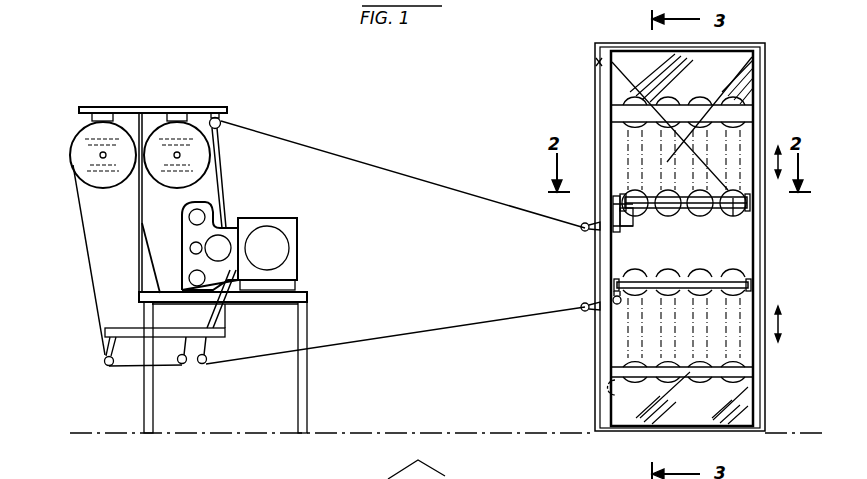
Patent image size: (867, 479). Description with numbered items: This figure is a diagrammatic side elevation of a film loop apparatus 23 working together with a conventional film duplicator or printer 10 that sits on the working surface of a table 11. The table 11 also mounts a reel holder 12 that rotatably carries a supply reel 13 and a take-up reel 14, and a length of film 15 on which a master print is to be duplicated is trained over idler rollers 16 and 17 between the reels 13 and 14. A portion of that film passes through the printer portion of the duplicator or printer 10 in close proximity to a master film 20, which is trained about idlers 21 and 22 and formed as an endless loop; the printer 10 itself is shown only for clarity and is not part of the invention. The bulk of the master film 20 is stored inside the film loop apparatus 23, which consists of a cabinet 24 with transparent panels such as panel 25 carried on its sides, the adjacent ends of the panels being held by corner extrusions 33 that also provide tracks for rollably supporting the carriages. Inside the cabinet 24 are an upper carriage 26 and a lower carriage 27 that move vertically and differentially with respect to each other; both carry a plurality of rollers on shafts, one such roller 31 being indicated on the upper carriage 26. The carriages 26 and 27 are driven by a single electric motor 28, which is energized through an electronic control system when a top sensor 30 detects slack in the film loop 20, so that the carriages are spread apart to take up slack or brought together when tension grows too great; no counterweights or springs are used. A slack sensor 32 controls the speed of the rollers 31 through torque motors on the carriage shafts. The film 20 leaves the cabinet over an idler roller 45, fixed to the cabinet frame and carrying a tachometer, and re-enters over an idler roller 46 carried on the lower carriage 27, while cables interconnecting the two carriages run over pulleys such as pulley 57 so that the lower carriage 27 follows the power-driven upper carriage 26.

The film duplicator or printer 10 is at (258, 205).
The table 11 is at (308, 296).
The reel holder 12 is at (145, 107).
The supply reel 13 is at (190, 132).
The take-up reel 14 is at (93, 130).
The film 15 is at (87, 248).
The idler roller 16 is at (112, 367).
The idler roller 17 is at (185, 367).
The master film 20 is at (348, 158).
The idler 21 is at (221, 129).
The idler 22 is at (205, 367).
The film loop apparatus 23 is at (549, 93).
The cabinet 24 is at (750, 46).
The transparent panel 25 is at (727, 75).
The upper carriage 26 is at (742, 210).
The lower carriage 27 is at (744, 298).
The electric motor 28 is at (630, 233).
The top sensor 30 is at (583, 231).
The roller 31 is at (728, 228).
The slack sensor 32 is at (583, 305).
The extrusion 33 is at (600, 393).
The idler roller 45 is at (596, 61).
The idler roller 46 is at (615, 306).
The pulley 57 is at (429, 468).